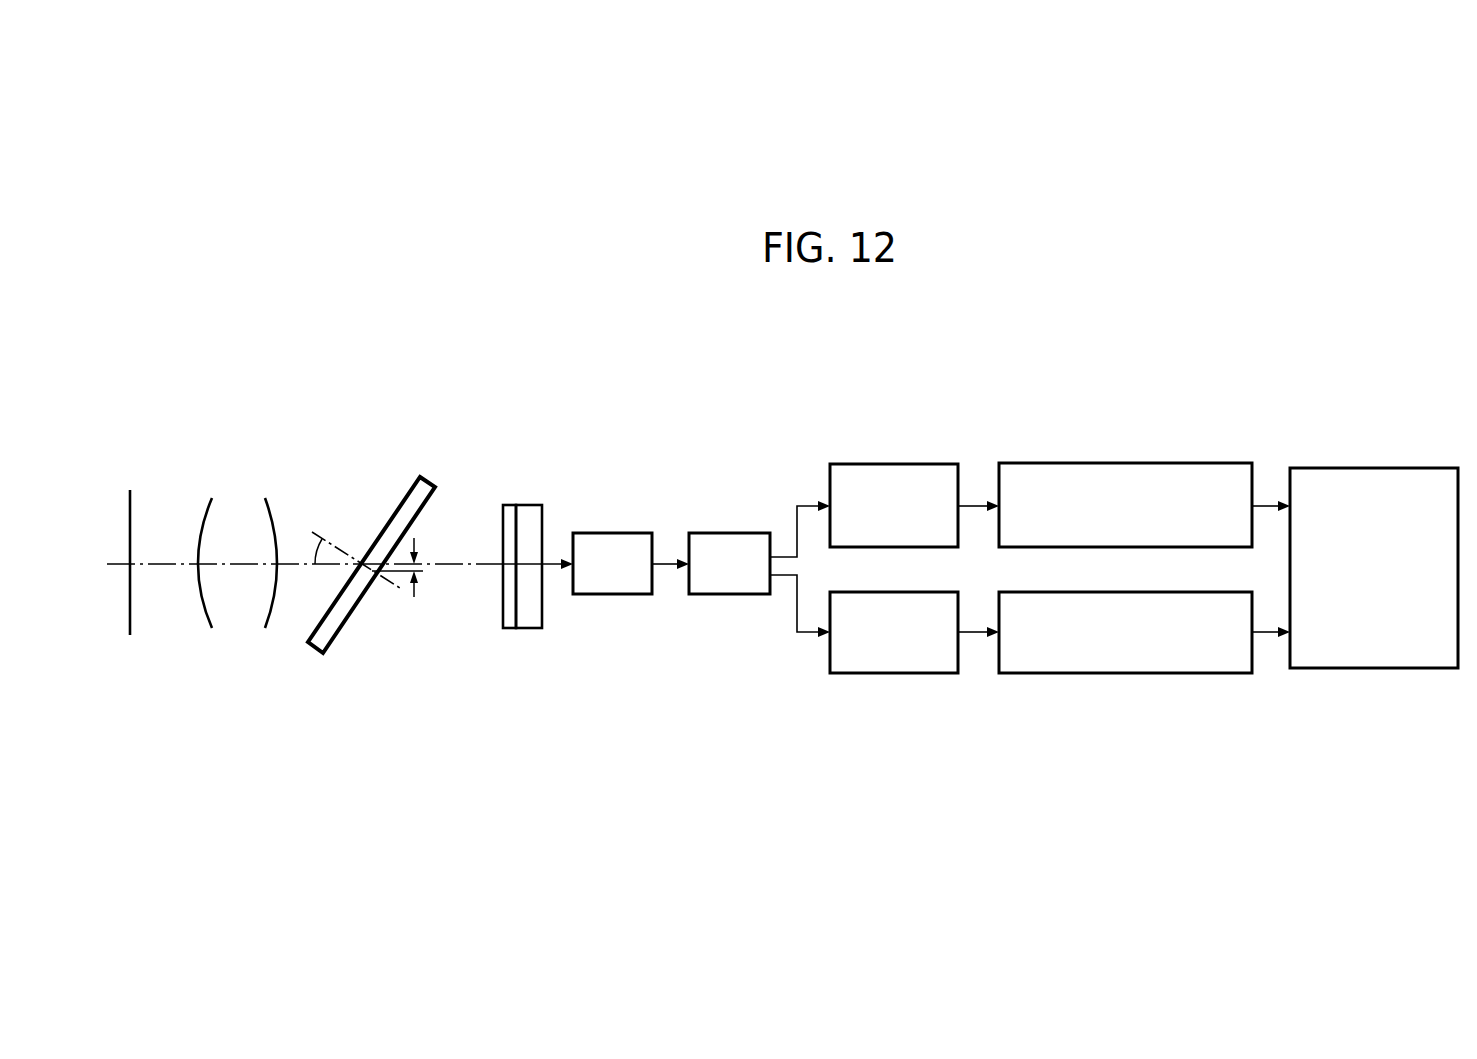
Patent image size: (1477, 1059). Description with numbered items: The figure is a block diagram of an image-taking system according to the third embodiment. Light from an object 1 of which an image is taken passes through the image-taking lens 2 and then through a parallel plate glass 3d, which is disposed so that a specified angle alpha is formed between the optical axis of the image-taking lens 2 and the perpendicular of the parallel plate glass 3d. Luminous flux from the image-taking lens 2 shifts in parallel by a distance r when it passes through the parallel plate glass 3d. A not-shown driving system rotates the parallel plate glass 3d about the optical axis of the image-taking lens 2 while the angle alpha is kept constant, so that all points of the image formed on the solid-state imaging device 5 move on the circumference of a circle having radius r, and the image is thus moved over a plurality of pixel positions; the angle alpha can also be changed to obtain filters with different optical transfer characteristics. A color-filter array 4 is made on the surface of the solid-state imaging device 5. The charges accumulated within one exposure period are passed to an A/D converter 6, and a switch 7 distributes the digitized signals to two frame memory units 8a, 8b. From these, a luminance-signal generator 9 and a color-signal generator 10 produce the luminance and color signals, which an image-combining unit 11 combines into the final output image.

The object 1 is at (130, 488).
The image-taking lens 2 is at (238, 493).
The parallel plate glass 3d is at (432, 478).
The color-filter array 4 is at (508, 503).
The solid-state imaging device 5 is at (534, 503).
The A/D converter 6 is at (610, 532).
The switch 7 is at (727, 532).
The frame memory unit 8a is at (895, 463).
The frame memory unit 8b is at (893, 674).
The luminance-signal generator 9 is at (1136, 462).
The color-signal generator 10 is at (1128, 674).
The image-combining unit 11 is at (1357, 467).